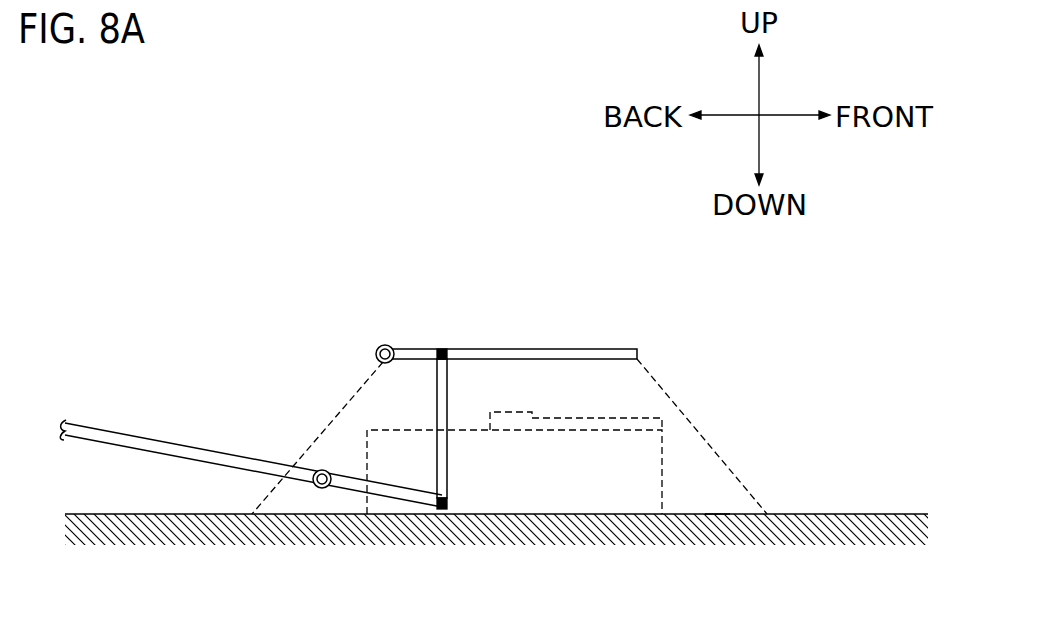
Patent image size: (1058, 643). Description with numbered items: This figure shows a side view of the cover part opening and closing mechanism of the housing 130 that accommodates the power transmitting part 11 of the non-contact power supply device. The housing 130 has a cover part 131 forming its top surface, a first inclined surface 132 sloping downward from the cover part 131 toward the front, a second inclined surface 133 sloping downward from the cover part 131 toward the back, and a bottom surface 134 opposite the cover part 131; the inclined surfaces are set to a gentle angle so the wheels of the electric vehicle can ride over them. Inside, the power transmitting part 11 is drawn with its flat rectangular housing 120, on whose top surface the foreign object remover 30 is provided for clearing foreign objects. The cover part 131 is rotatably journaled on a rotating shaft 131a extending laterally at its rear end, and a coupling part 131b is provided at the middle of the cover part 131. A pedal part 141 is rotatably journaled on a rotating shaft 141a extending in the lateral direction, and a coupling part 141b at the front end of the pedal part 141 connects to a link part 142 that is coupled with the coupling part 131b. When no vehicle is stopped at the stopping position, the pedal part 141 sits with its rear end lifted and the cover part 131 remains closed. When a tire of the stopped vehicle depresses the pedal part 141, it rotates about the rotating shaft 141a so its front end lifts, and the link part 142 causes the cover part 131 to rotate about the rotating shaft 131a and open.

The power transmitting part 11 is at (690, 453).
The foreign object remover 30 is at (566, 402).
The housing 120 is at (658, 486).
The housing 130 is at (326, 275).
The cover part 131 is at (536, 349).
The rotating shaft 131a is at (377, 350).
The coupling part 131b is at (442, 348).
The first inclined surface 132 is at (653, 380).
The second inclined surface 133 is at (316, 432).
The bottom surface 134 is at (717, 514).
The pedal part 141 is at (143, 438).
The rotating shaft 141a is at (322, 489).
The coupling part 141b is at (442, 510).
The link part 142 is at (437, 403).